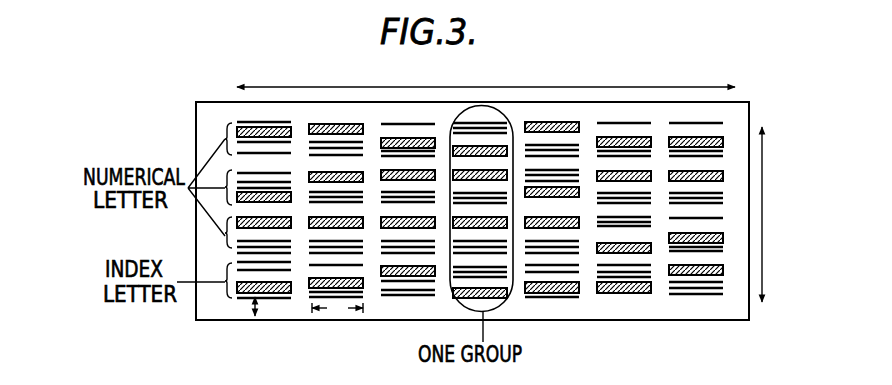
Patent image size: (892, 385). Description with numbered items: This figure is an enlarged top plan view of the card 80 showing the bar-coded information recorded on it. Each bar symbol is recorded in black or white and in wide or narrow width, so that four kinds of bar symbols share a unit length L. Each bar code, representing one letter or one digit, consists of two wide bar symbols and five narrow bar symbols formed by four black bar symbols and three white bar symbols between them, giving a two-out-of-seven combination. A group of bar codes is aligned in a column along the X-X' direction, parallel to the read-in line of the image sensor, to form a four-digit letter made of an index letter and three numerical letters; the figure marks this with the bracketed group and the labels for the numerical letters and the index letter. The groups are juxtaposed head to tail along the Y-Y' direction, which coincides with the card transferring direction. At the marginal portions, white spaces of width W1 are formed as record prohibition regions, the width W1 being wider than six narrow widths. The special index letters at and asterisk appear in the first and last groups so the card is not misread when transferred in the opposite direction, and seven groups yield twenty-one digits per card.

The card 80 is at (749, 102).
The Y-Y' direction Y is at (487, 84).
The X-X' direction X is at (777, 216).
The width W1 of white space W1 is at (277, 308).
The unit length L is at (337, 308).